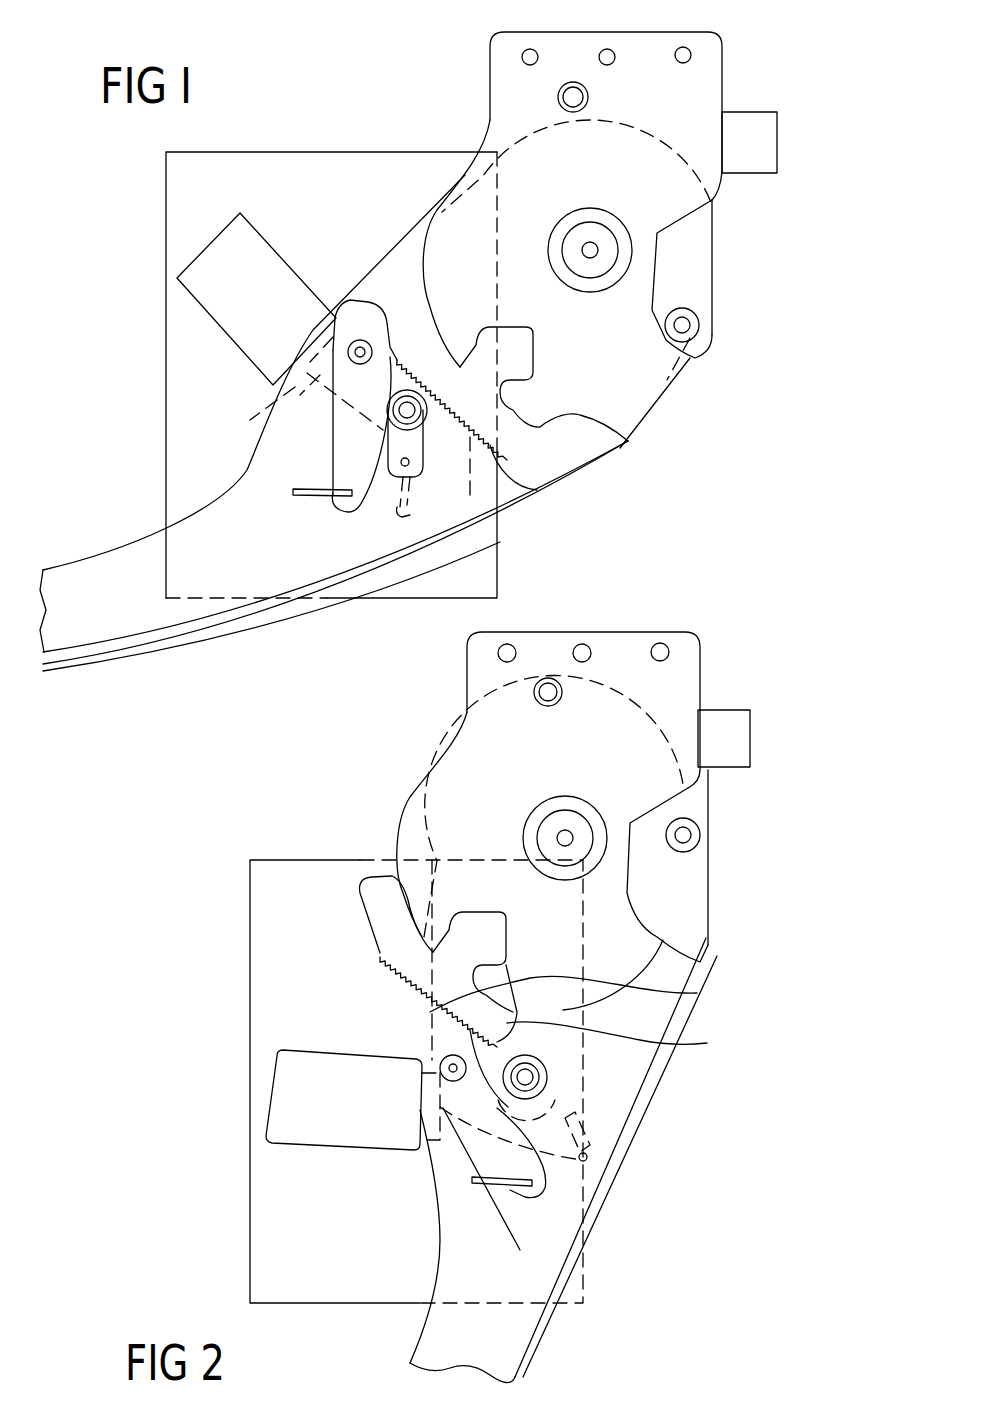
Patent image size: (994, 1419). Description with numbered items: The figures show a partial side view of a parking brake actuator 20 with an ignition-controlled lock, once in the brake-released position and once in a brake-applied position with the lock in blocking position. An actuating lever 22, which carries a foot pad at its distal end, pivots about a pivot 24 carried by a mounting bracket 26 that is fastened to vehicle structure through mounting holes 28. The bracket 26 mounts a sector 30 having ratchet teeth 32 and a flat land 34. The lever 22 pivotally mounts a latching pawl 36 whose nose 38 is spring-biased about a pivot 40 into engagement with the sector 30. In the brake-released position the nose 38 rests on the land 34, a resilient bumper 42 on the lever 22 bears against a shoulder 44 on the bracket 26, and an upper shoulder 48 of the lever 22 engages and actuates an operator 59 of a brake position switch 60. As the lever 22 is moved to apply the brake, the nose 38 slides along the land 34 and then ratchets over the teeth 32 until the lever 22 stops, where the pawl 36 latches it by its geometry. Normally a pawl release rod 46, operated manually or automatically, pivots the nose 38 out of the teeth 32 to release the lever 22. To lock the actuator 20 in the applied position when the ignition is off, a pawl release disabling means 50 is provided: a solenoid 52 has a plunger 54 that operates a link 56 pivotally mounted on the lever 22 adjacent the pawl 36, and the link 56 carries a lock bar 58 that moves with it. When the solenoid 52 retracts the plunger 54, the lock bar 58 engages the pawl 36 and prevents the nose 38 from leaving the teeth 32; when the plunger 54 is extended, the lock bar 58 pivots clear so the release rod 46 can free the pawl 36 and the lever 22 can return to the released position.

In FIG. 1, the parking brake actuator 20 is at (755, 78).
In FIG. 2, the parking brake actuator 20 is at (727, 609).
In FIG. 1, the actuating lever 22 is at (190, 635).
In FIG. 2, the actuating lever 22 is at (540, 1343).
In FIG. 1, the pivot 24 is at (595, 250).
In FIG. 2, the pivot 24 is at (562, 838).
In FIG. 1, the mounting bracket 26 is at (505, 97).
In FIG. 2, the mounting bracket 26 is at (482, 678).
In FIG. 1, the mounting holes 28 is at (678, 50).
In FIG. 2, the mounting holes 28 is at (655, 645).
In FIG. 1, the sector 30 is at (630, 441).
In FIG. 2, the sector 30 is at (707, 1043).
In FIG. 1, the ratchet teeth 32 is at (537, 490).
In FIG. 2, the ratchet teeth 32 is at (400, 985).
In FIG. 1, the flat land 34 is at (333, 365).
In FIG. 2, the flat land 34 is at (363, 922).
In FIG. 1, the latching pawl 36 is at (355, 500).
In FIG. 2, the latching pawl 36 is at (527, 1190).
In FIG. 1, the nose 38 is at (385, 315).
In FIG. 2, the nose 38 is at (697, 993).
In FIG. 1, the pivot 40 is at (355, 352).
In FIG. 2, the pivot 40 is at (440, 1070).
In FIG. 1, the resilient bumper 42 is at (686, 323).
In FIG. 2, the resilient bumper 42 is at (683, 835).
In FIG. 1, the shoulder 44 is at (693, 350).
In FIG. 2, the shoulder 44 is at (708, 917).
In FIG. 1, the pawl release rod 46 is at (313, 490).
In FIG. 2, the pawl release rod 46 is at (490, 1185).
In FIG. 1, the upper shoulder 48 is at (712, 325).
In FIG. 2, the upper shoulder 48 is at (707, 840).
In FIG. 1, the pawl release disabling means 50 is at (289, 178).
In FIG. 2, the pawl release disabling means 50 is at (252, 1028).
In FIG. 1, the solenoid 52 is at (210, 250).
In FIG. 2, the solenoid 52 is at (280, 1060).
In FIG. 1, the plunger 54 is at (307, 400).
In FIG. 2, the plunger 54 is at (583, 1160).
In FIG. 1, the link 56 is at (420, 433).
In FIG. 2, the link 56 is at (583, 1127).
In FIG. 1, the lock bar 58 is at (430, 433).
In FIG. 2, the lock bar 58 is at (490, 1113).
In FIG. 1, the operator 59 is at (741, 243).
In FIG. 2, the operator 59 is at (730, 840).
In FIG. 1, the brake position switch 60 is at (780, 126).
In FIG. 2, the brake position switch 60 is at (730, 720).